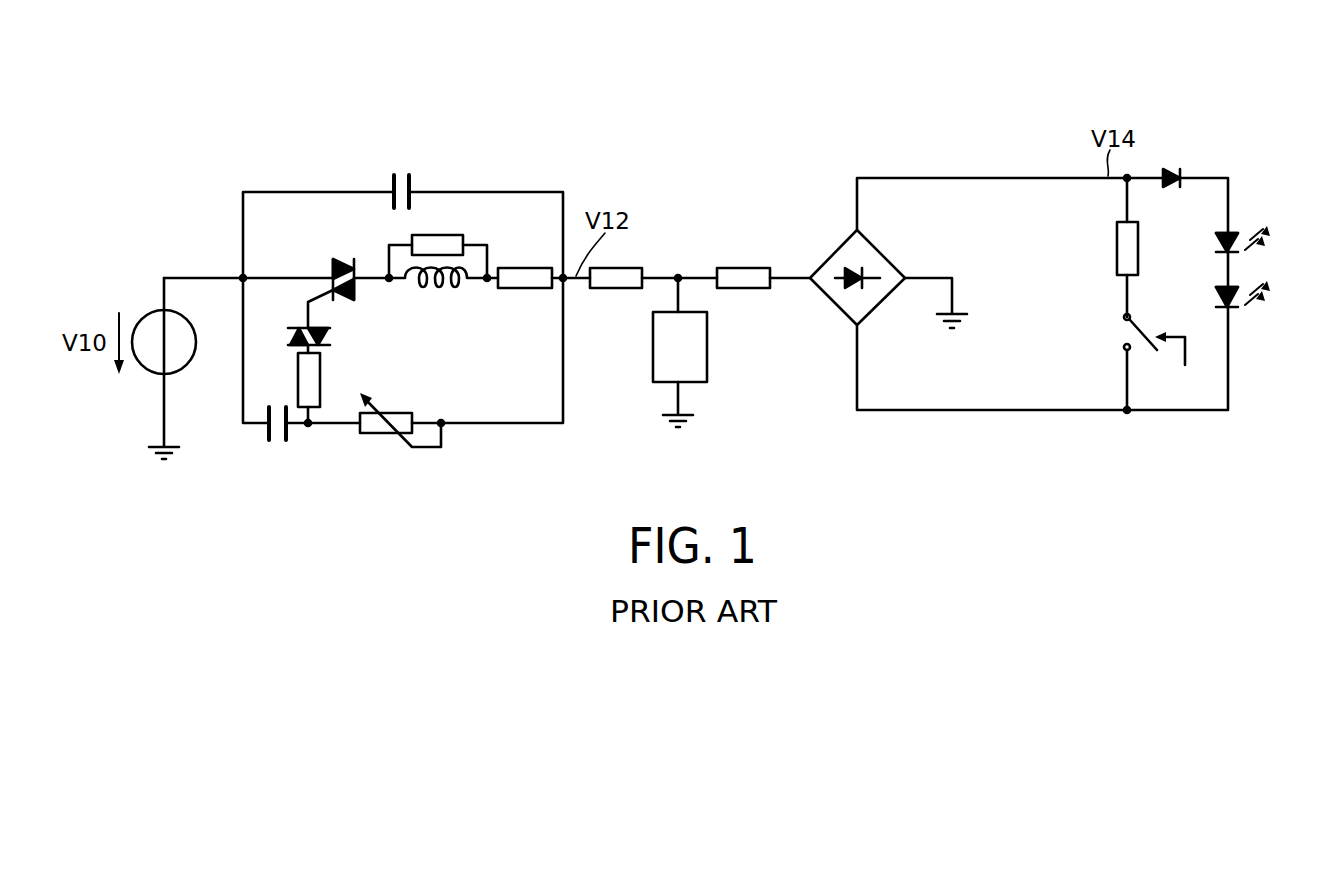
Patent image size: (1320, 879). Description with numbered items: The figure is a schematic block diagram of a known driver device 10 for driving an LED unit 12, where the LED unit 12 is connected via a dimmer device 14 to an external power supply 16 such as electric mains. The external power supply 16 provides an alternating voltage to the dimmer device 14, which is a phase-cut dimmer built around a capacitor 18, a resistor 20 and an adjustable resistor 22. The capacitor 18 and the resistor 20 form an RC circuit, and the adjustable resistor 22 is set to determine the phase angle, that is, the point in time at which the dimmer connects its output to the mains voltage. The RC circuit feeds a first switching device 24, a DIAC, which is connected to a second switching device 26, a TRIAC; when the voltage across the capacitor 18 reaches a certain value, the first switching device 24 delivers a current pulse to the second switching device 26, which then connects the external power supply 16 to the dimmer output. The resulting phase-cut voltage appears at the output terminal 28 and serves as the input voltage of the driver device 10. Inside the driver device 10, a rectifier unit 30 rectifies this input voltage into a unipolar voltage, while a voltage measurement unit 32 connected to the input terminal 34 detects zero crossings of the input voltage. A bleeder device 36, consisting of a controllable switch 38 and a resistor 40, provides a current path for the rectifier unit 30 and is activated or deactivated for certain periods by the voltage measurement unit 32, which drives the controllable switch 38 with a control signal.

The driver device 10 is at (1012, 110).
The LED unit 12 is at (1271, 234).
The dimmer device 14 is at (453, 170).
The external power supply 16 is at (150, 368).
The capacitor 18 is at (268, 440).
The resistor 20 is at (320, 375).
The adjustable resistor 22 is at (366, 430).
The first switching device 24 is at (330, 334).
The second switching device 26 is at (333, 268).
The output terminal 28 is at (560, 286).
The rectifier unit 30 is at (830, 256).
The voltage measurement unit 32 is at (653, 365).
The input terminal 34 is at (678, 276).
The bleeder device 36 is at (1103, 359).
The controllable switch 38 is at (1124, 318).
The resistor 40 is at (1138, 248).